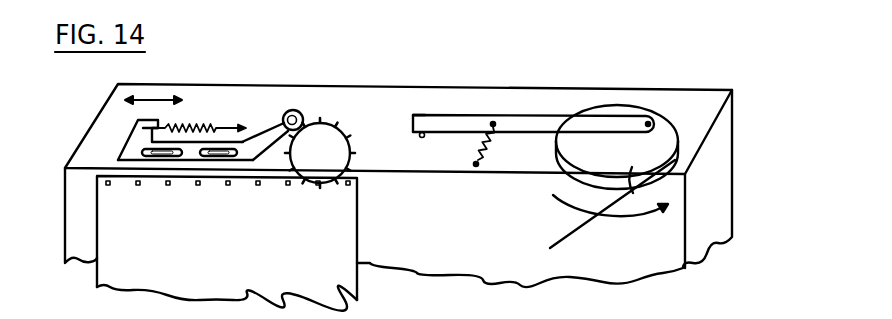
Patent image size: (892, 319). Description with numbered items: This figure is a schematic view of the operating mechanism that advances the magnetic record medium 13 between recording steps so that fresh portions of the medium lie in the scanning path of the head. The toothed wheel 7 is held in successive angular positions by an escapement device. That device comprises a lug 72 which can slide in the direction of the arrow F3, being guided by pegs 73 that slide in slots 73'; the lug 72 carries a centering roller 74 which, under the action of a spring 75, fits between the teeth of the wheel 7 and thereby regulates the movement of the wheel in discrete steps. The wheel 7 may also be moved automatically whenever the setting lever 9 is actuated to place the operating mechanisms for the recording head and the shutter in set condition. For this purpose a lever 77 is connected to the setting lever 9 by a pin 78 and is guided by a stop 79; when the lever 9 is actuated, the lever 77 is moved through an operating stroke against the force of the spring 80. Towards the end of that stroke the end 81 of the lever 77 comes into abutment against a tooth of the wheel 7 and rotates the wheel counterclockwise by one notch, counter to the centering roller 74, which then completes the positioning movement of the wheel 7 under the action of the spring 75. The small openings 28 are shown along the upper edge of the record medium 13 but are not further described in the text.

The toothed wheel 7 is at (330, 143).
The setting lever 9 is at (548, 250).
The magnetic record medium 13 is at (230, 283).
The holes 28 is at (229, 187).
The lug 72 is at (132, 142).
The pegs 73 is at (147, 200).
The slots 73' is at (200, 200).
The centering roller 74 is at (296, 109).
The spring 75 is at (200, 126).
The lever 77 is at (512, 128).
The pin 78 is at (648, 121).
The stop 79 is at (422, 138).
The spring 80 is at (483, 154).
The end of the lever 81 is at (420, 114).
The arrow F3 is at (158, 98).